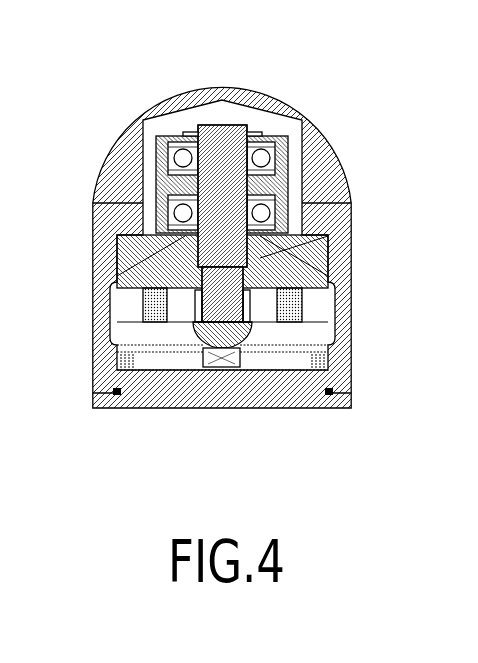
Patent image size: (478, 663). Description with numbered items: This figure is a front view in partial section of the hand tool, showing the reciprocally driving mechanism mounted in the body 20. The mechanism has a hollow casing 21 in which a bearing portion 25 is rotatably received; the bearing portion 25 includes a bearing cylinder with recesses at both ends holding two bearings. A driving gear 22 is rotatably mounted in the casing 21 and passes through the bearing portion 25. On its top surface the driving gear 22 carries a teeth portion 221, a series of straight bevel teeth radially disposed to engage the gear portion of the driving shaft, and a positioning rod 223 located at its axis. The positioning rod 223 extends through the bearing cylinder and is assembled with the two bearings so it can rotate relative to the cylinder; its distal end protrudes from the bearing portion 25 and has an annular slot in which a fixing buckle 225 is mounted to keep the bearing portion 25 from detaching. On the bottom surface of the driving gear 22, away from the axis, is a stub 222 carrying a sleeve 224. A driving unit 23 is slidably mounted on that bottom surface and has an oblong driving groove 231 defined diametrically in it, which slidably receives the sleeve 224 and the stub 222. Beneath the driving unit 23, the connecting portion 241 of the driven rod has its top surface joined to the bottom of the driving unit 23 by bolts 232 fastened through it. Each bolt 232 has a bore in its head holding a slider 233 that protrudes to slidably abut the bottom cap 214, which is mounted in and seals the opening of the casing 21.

The body 20 is at (337, 87).
The hollow casing 21 is at (320, 153).
The bottom cap 214 is at (105, 400).
The driving gear 22 is at (185, 258).
The teeth portion 221 is at (128, 260).
The stub 222 is at (232, 278).
The positioning rod 223 is at (213, 140).
The fixing buckle 225 is at (247, 138).
The bearing portion 25 is at (283, 186).
The driving unit 23 is at (153, 307).
The sleeve 224 is at (278, 306).
The oblong driving groove 231 is at (180, 313).
The connecting portion 241 is at (237, 330).
The bolt 232 is at (243, 362).
The slider 233 is at (222, 367).